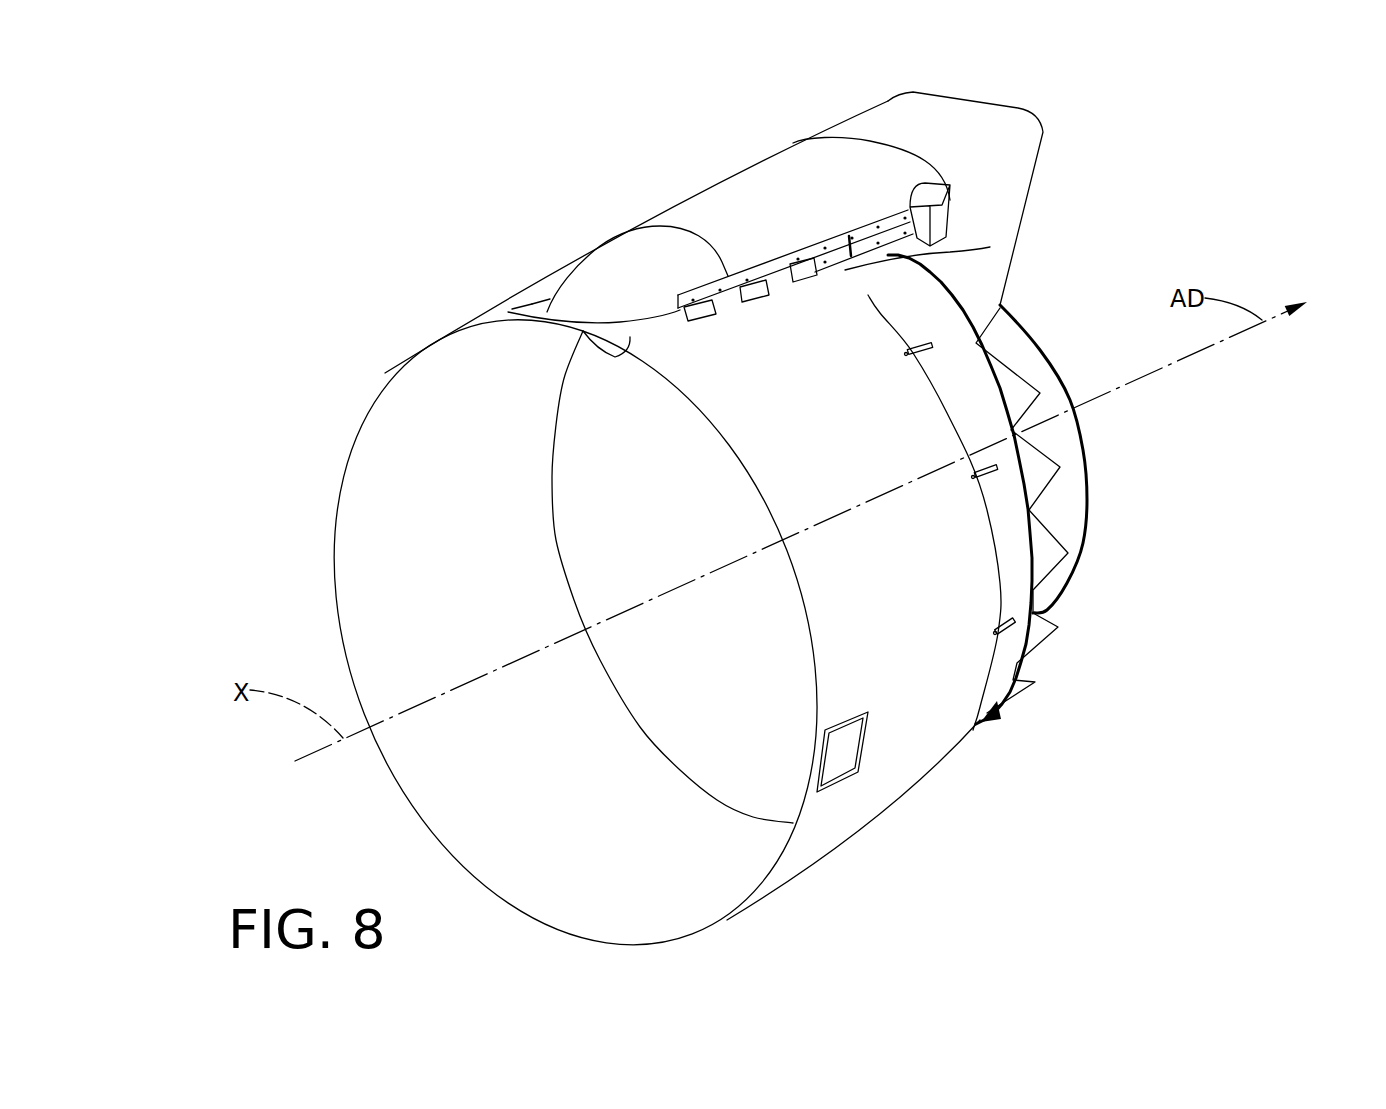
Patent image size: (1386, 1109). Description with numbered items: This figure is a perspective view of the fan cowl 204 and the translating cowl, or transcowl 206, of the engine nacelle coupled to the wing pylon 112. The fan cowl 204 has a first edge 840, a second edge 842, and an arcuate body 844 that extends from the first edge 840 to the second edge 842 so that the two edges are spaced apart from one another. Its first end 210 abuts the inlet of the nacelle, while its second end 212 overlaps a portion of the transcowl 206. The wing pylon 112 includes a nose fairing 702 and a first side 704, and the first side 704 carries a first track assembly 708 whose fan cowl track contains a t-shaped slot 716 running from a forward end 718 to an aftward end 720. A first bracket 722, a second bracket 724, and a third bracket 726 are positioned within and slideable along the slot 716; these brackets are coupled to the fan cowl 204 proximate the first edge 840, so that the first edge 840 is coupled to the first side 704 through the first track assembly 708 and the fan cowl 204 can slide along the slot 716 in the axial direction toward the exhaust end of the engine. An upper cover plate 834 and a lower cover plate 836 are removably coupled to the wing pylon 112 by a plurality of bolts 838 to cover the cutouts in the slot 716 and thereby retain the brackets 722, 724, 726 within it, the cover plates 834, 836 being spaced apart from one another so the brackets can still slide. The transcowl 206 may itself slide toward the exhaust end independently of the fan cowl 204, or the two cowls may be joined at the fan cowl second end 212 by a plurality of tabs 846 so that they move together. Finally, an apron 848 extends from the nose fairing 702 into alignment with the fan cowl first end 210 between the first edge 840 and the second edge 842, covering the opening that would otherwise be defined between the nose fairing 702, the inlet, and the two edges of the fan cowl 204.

The wing pylon 112 is at (858, 88).
The fan cowl 204 is at (729, 944).
The translating cowl 206 is at (1022, 459).
The first end 210 is at (335, 545).
The second end 212 is at (1000, 540).
The nose fairing 702 is at (577, 256).
The first side 704 is at (1008, 208).
The first track assembly 708 is at (851, 215).
The t-shaped slot 716 is at (990, 247).
The forward end 718 is at (683, 313).
The aftward end 720 is at (935, 184).
The first bracket 722 is at (728, 341).
The second bracket 724 is at (779, 321).
The third bracket 726 is at (836, 305).
The upper cover plate 834 is at (678, 305).
The lower cover plate 836 is at (863, 250).
The bolts 838 is at (750, 279).
The first edge 840 is at (585, 334).
The second edge 842 is at (518, 307).
The arcuate body 844 is at (576, 857).
The tabs 846 is at (960, 347).
The apron 848 is at (547, 313).